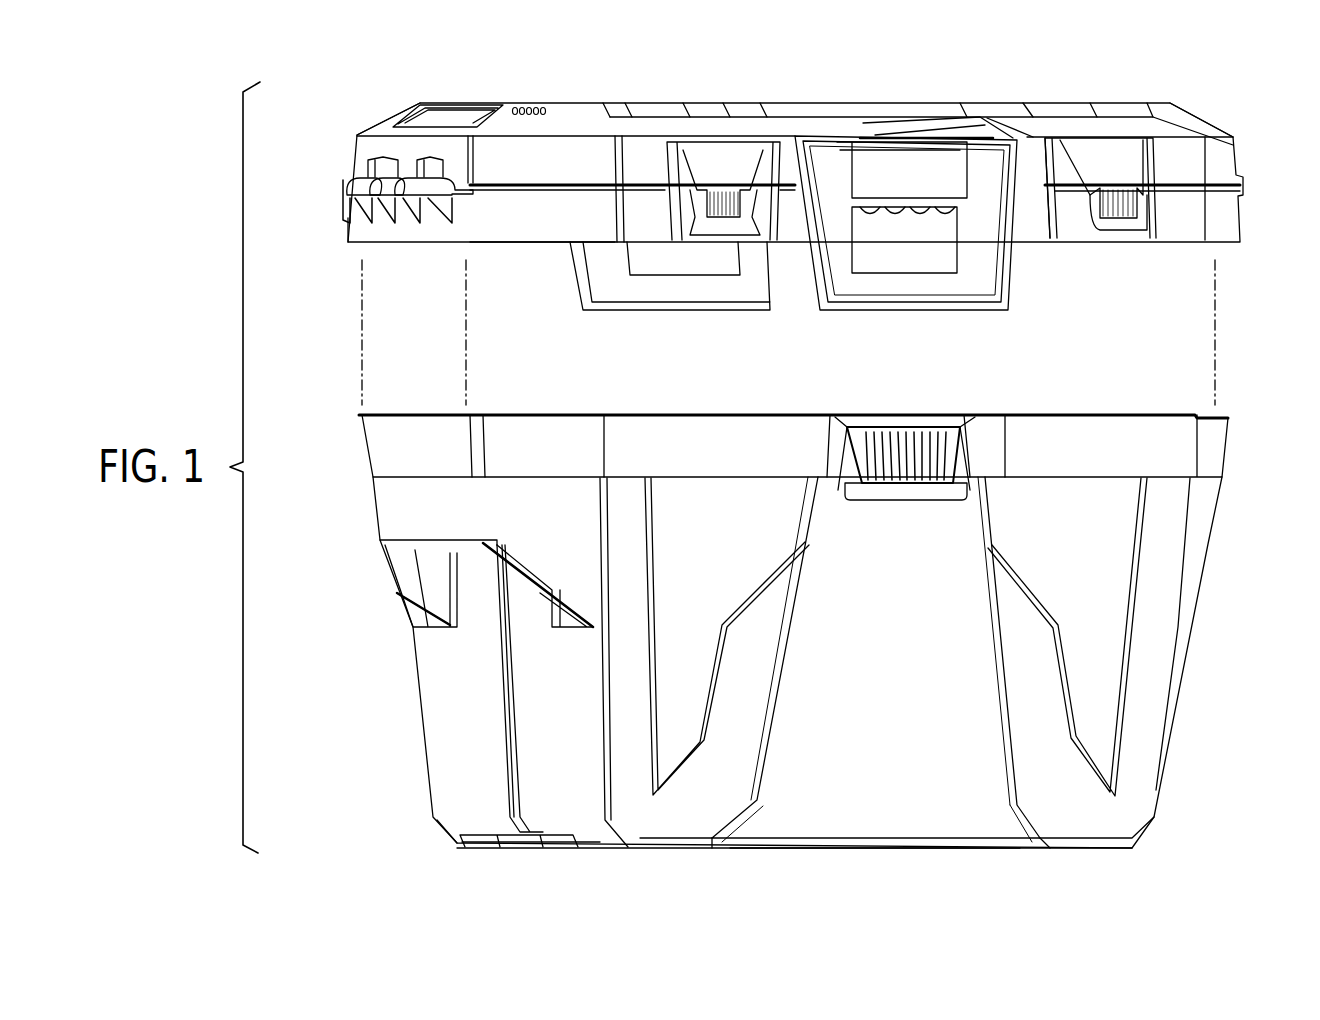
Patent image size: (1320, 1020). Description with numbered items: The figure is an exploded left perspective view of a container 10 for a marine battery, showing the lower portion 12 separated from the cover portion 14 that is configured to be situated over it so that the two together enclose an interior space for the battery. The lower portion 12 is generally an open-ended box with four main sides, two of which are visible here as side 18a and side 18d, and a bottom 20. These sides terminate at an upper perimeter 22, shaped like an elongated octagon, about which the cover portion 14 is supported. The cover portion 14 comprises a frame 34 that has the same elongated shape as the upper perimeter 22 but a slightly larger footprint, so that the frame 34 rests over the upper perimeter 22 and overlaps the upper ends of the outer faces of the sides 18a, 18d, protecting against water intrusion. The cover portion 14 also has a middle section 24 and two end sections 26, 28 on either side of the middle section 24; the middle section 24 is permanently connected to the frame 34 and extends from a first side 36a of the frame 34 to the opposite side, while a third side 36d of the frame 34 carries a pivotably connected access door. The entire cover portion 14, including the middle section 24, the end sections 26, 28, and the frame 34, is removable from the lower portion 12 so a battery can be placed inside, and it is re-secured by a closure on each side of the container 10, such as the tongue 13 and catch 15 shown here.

The container 10 is at (1258, 250).
The lower portion 12 is at (398, 513).
The tongue 13 is at (912, 490).
The cover portion 14 is at (652, 107).
The catch 15 is at (910, 292).
The main side 18a is at (921, 805).
The main side 18d is at (444, 732).
The bottom 20 is at (578, 830).
The upper perimeter 22 is at (1103, 413).
The middle section 24 is at (850, 135).
The end section 26 is at (413, 85).
The end section 28 is at (1180, 80).
The frame 34 is at (522, 222).
The first side 36a is at (1035, 217).
The third side 36d is at (368, 232).